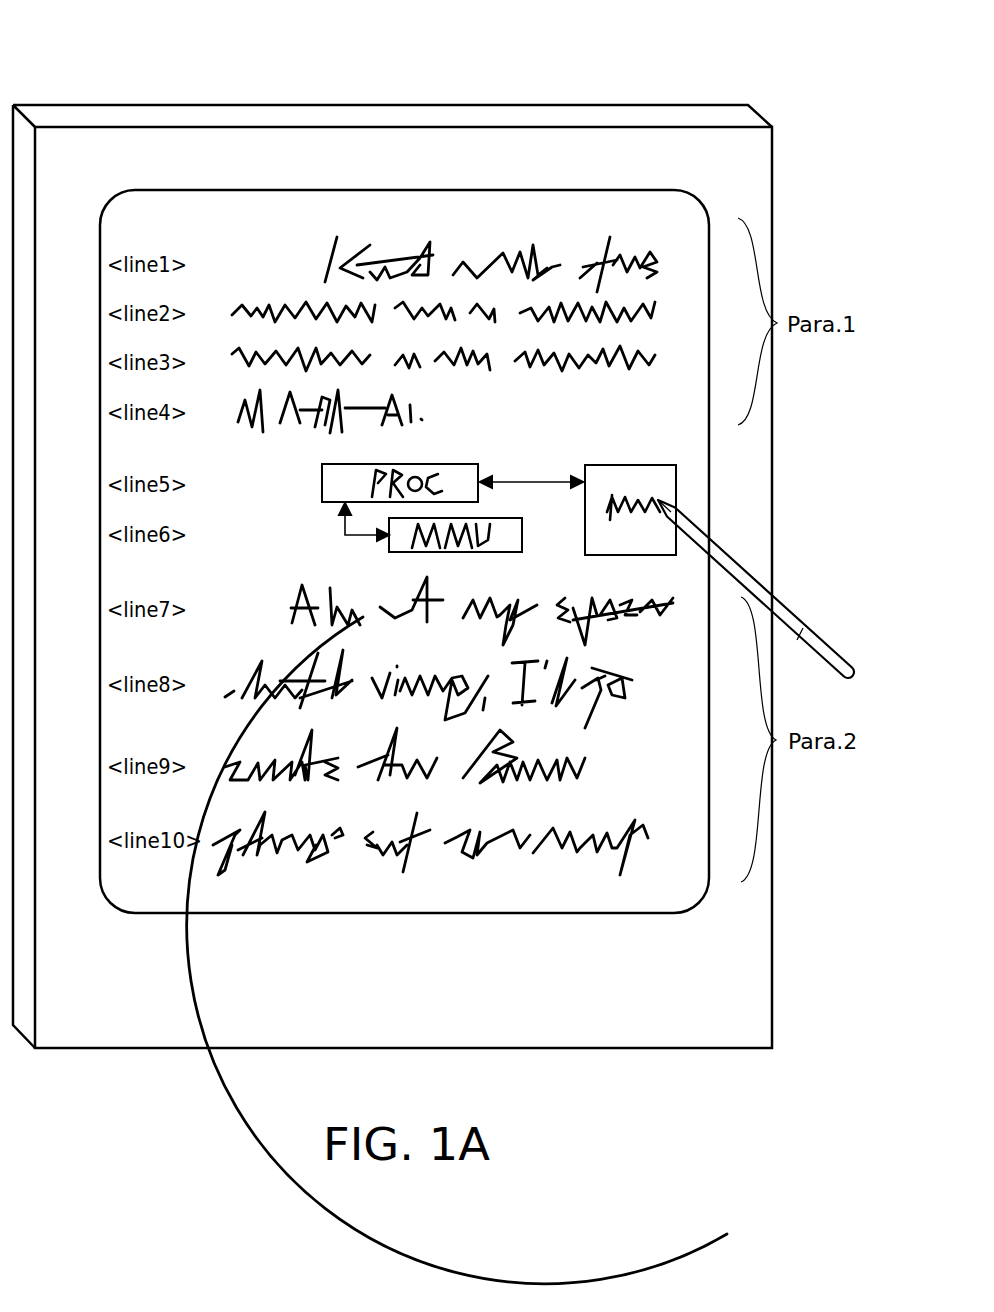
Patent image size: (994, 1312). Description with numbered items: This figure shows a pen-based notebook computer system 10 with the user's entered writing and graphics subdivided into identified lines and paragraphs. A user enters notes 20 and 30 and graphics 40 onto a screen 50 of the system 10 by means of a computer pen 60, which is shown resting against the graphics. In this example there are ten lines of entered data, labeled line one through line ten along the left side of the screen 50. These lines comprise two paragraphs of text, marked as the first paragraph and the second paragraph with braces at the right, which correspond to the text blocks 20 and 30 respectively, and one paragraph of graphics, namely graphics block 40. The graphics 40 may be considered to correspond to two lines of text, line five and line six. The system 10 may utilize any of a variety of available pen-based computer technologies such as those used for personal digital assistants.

The notebook computer system 10 is at (100, 88).
The notes 20 is at (527, 218).
The notes 30 is at (362, 885).
The graphics 40 is at (530, 438).
The screen 50 is at (560, 928).
The computer pen 60 is at (833, 642).